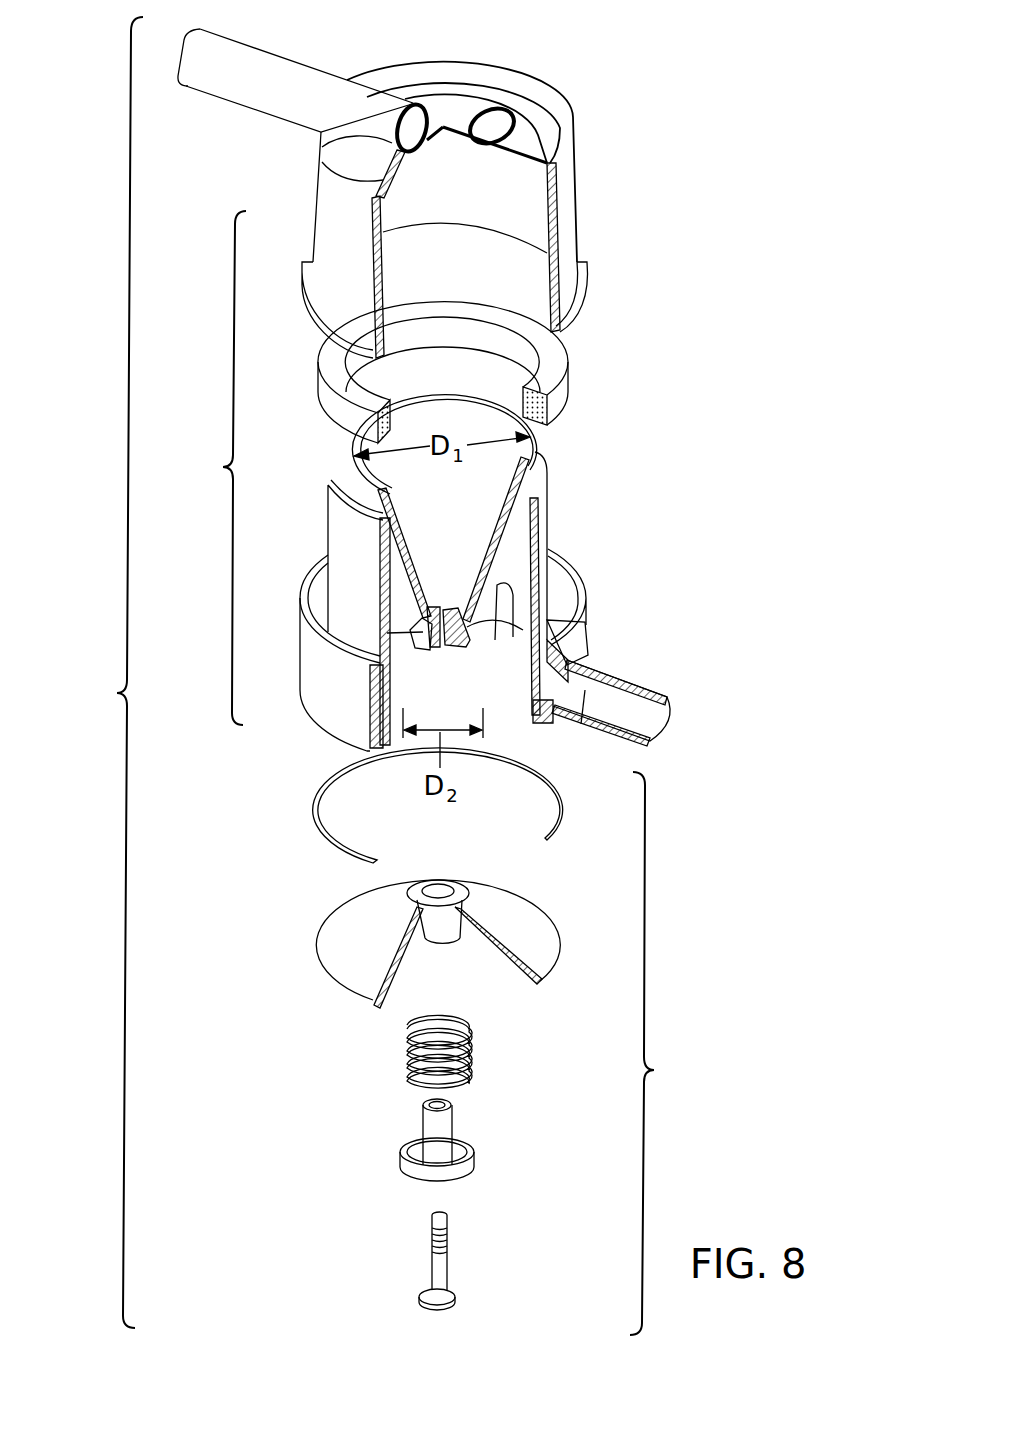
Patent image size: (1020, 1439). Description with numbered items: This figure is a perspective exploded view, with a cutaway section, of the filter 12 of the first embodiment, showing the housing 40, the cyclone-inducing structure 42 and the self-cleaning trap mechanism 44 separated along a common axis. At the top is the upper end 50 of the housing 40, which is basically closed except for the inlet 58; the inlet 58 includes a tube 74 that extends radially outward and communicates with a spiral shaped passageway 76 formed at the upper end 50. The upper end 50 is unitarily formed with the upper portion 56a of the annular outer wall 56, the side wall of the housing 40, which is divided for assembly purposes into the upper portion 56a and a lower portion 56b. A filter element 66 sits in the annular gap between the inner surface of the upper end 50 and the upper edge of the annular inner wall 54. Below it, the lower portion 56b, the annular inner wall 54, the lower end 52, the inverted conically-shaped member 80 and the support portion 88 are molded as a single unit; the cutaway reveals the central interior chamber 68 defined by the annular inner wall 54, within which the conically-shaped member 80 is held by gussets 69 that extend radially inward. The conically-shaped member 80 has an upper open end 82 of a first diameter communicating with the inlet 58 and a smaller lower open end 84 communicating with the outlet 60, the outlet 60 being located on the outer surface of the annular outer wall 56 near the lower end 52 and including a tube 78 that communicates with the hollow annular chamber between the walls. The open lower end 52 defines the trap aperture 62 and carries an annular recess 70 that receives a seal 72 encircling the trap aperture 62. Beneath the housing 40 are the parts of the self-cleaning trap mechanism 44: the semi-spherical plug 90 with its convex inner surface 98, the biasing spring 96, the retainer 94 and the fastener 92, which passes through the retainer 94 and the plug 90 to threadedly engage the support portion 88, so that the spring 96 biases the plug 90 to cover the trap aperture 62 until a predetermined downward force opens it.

The filter 12 is at (113, 672).
The housing 40 is at (680, 354).
The cyclone-inducing structure 42 is at (584, 476).
The self-cleaning trap mechanism 44 is at (659, 1053).
The upper end 50 is at (560, 128).
The lower end 52 is at (317, 750).
The annular inner wall 54 is at (543, 542).
The annular outer wall 56 is at (217, 468).
The upper portion 56a is at (342, 260).
The lower portion 56b is at (333, 688).
The inlet 58 is at (217, 60).
The outlet 60 is at (618, 695).
The trap aperture 62 is at (533, 716).
The filter element 66 is at (557, 398).
The central interior chamber 68 is at (523, 207).
The gussets 69 is at (397, 628).
The annular recess 70 is at (543, 718).
The seal 72 is at (558, 841).
The tube 74 is at (186, 65).
The spiral shaped passageway 76 is at (508, 95).
The tube 78 is at (652, 720).
The inverted conically-shaped member 80 is at (497, 527).
The upper open end 82 is at (527, 439).
The lower open end 84 is at (477, 632).
The support portion 88 is at (437, 630).
The plug 90 is at (560, 967).
The fastener 92 is at (452, 1290).
The retainer 94 is at (467, 1188).
The biasing spring 96 is at (470, 1056).
The convex inner surface 98 is at (337, 940).